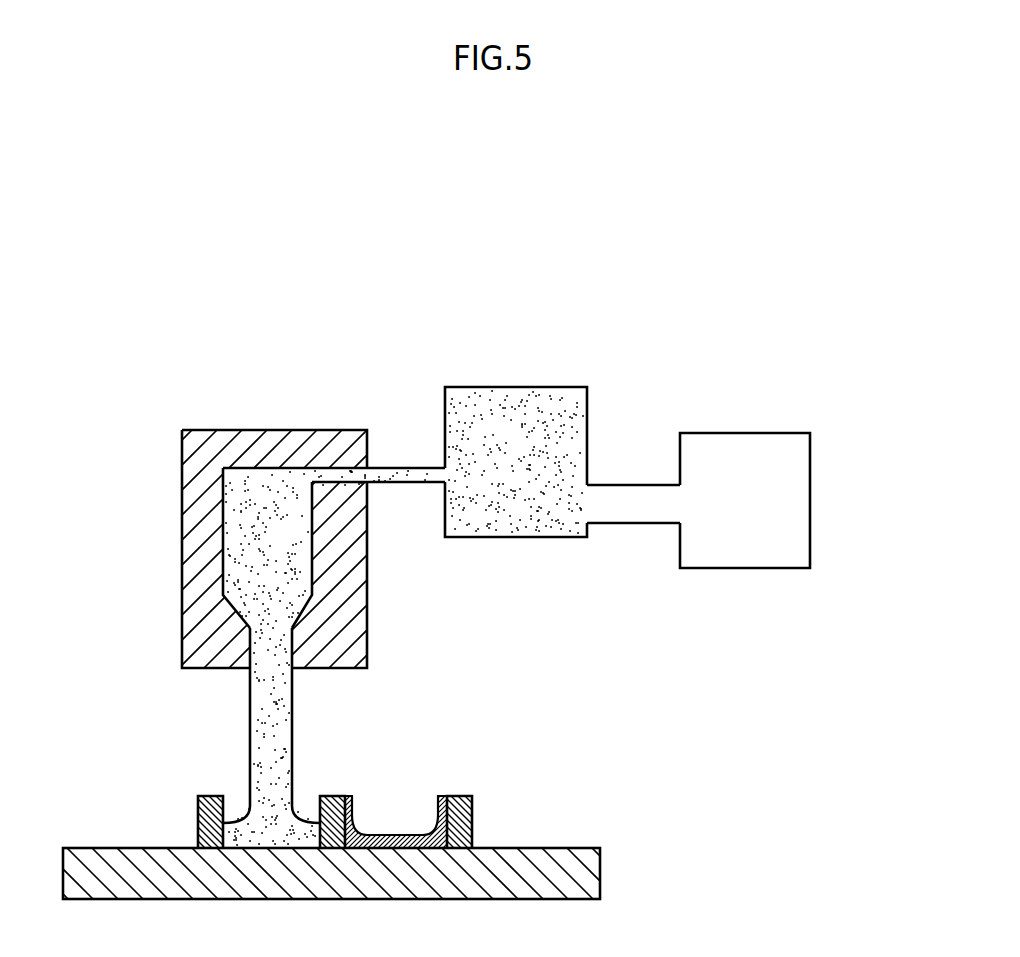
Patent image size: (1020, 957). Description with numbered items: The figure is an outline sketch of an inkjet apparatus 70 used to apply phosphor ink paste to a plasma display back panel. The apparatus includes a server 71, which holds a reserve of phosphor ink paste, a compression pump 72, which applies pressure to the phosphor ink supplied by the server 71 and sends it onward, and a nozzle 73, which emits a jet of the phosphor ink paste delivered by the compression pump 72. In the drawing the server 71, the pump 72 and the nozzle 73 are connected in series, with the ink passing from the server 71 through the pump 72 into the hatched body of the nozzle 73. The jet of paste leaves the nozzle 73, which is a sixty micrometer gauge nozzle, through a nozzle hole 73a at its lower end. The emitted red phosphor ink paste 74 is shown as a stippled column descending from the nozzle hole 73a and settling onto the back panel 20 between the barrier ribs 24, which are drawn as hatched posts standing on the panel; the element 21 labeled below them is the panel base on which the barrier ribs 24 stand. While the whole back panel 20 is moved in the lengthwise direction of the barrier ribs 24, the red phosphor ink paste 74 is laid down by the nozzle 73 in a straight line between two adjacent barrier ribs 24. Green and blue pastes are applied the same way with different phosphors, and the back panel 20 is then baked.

The inkjet apparatus 70 is at (464, 173).
The server 71 is at (743, 432).
The compression pump 72 is at (520, 387).
The nozzle 73 is at (368, 623).
The nozzle hole 73a is at (233, 690).
The red phosphor ink paste 74 is at (250, 730).
The back panel 20 is at (741, 829).
The base plate / substrate 21 is at (602, 870).
The barrier ribs 24 is at (198, 793).